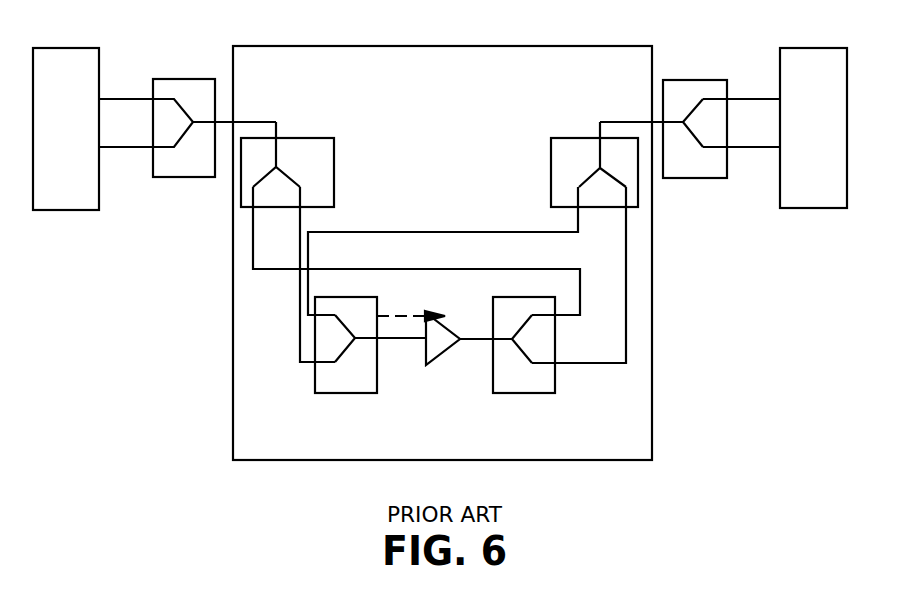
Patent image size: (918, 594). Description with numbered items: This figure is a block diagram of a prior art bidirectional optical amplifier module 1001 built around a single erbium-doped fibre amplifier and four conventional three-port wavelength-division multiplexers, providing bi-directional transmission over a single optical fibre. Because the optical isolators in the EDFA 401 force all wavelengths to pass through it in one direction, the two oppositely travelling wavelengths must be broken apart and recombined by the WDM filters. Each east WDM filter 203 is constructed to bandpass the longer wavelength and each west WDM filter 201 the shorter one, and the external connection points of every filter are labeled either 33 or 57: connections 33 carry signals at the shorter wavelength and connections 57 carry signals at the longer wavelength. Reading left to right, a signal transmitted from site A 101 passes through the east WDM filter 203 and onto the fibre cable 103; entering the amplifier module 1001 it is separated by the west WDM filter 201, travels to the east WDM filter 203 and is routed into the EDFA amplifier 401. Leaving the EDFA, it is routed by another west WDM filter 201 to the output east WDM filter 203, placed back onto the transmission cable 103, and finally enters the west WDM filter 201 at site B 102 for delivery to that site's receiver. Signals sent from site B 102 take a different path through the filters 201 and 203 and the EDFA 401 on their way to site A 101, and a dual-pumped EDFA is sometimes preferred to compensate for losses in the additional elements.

The 1533 nm connection point 33 is at (122, 147).
The 1557 nm connection point 57 is at (122, 99).
The site A 101 is at (68, 117).
The site B 102 is at (814, 116).
The fibre cable 103 is at (253, 122).
The west WDM filter 201 is at (484, 225).
The east WDM filter 203 is at (395, 225).
The EDFA amplifier 401 is at (470, 308).
The amplifier module 1001 is at (232, 373).